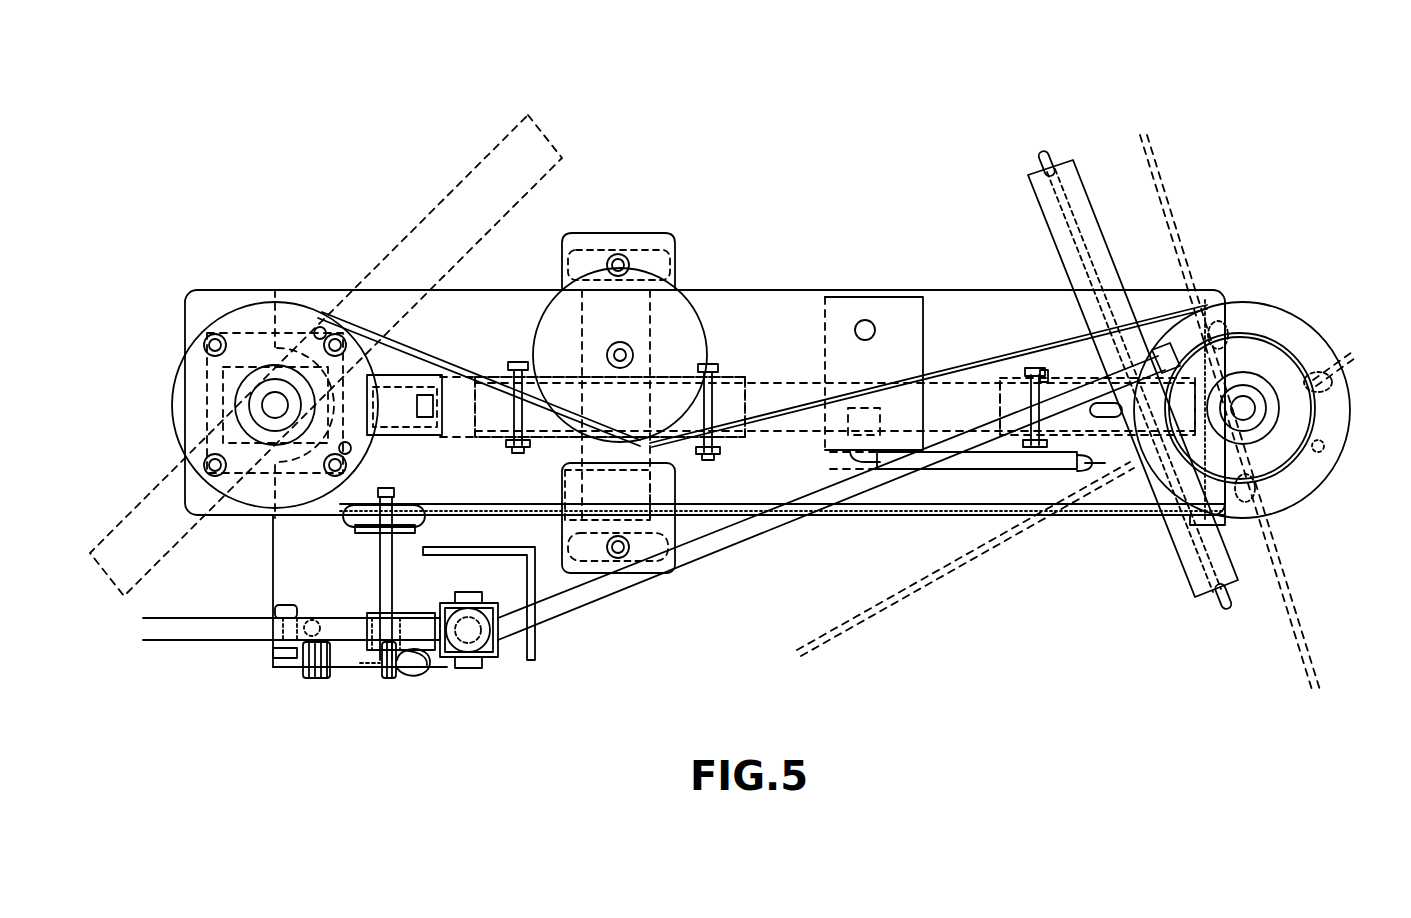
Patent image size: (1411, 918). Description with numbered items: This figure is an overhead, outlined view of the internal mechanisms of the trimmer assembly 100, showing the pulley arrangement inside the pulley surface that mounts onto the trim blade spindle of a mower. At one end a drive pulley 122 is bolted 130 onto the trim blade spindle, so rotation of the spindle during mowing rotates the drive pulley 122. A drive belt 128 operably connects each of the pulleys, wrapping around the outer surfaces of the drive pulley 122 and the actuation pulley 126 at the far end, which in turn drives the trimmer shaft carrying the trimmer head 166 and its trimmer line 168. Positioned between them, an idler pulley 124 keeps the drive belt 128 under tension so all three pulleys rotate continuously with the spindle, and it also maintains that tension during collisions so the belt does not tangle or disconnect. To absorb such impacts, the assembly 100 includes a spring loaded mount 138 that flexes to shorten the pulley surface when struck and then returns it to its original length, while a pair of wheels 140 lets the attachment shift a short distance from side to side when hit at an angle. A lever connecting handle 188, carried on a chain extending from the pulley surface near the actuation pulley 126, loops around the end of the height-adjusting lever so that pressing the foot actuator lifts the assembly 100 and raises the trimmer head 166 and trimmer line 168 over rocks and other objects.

The trimmer assembly 100 is at (650, 100).
The drive pulley 122 is at (173, 385).
The idler pulley 124 is at (700, 312).
The actuation pulley 126 is at (1257, 312).
The drive belt 128 is at (322, 515).
The bolt 130 is at (276, 402).
The spring loaded mount 138 is at (1000, 460).
The wheels 140 is at (592, 258).
The trimmer head 166 is at (1320, 450).
The trimmer line 168 is at (1295, 610).
The lever connecting handle 188 is at (1028, 192).